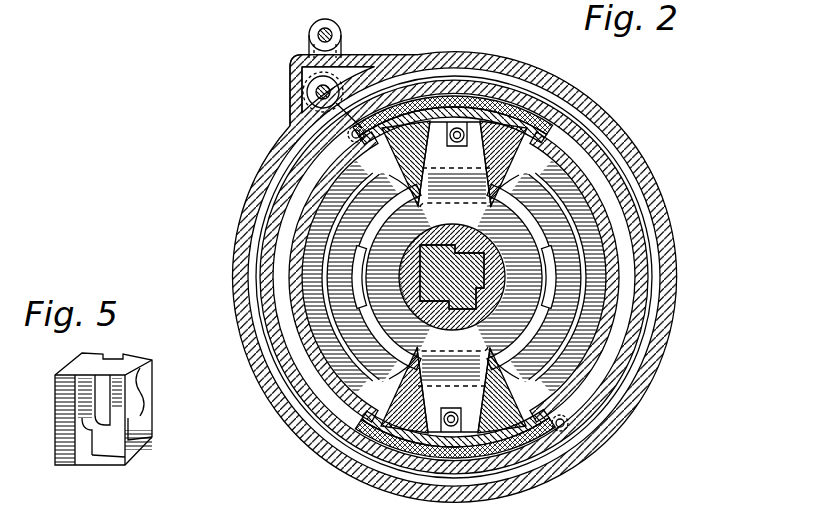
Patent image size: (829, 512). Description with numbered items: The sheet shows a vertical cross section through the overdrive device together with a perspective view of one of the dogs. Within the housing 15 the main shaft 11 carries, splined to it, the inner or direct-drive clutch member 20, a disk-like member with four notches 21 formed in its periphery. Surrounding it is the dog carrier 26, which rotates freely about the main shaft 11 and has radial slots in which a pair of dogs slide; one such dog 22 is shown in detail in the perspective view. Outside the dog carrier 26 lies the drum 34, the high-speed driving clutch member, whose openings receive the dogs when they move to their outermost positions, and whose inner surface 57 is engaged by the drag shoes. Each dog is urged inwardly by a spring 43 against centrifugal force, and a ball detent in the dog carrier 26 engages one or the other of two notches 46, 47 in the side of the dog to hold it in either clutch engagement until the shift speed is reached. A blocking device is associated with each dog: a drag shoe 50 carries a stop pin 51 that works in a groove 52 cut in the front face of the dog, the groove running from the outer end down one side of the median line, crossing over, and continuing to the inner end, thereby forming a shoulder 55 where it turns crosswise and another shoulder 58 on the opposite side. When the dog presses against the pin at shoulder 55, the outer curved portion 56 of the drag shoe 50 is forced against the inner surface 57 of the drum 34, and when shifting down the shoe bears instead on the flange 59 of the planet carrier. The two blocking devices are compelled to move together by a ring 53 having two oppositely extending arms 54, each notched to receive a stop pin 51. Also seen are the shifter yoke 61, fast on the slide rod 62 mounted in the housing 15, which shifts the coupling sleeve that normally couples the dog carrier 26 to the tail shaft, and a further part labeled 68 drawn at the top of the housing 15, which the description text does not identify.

In FIG. 2, the housing 15 is at (250, 207).
In FIG. 2, the drum 34 is at (292, 170).
In FIG. 2, the shifter yoke 61 is at (310, 118).
In FIG. 2, the slide rod 62 is at (312, 92).
In FIG. 2, the mounting lug 68 is at (310, 37).
In FIG. 2, the spring 43 is at (357, 126).
In FIG. 2, the outer curved portion 56 is at (495, 85).
In FIG. 2, the arms 54 is at (505, 135).
In FIG. 2, the drag shoe 50 is at (512, 176).
In FIG. 2, the stop pin 51 is at (451, 406).
In FIG. 2, the dog carrier 26 is at (567, 218).
In FIG. 2, the inner surface 57 is at (628, 230).
In FIG. 2, the flange 59 is at (612, 303).
In FIG. 2, the inner clutch member 20 is at (363, 237).
In FIG. 2, the ring 53 is at (383, 265).
In FIG. 2, the main shaft 11 is at (467, 277).
In FIG. 2, the notches 21 is at (352, 287).
In FIG. 5, the dog 22 is at (62, 400).
In FIG. 5, the shoulder 58 is at (85, 401).
In FIG. 5, the groove 52 is at (85, 419).
In FIG. 5, the shoulder 55 is at (92, 457).
In FIG. 5, the notch 46 is at (150, 377).
In FIG. 5, the notch 47 is at (150, 421).